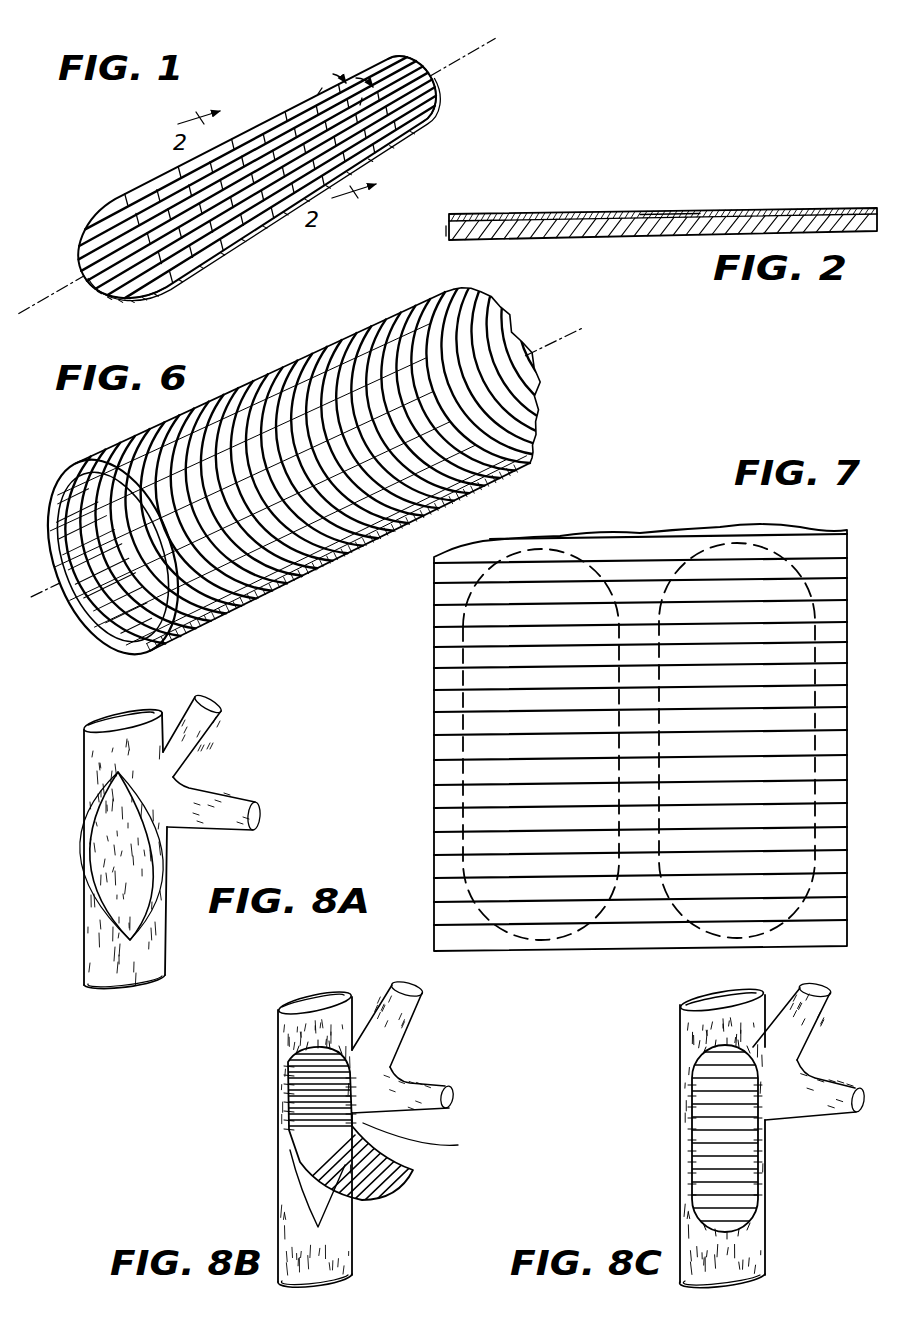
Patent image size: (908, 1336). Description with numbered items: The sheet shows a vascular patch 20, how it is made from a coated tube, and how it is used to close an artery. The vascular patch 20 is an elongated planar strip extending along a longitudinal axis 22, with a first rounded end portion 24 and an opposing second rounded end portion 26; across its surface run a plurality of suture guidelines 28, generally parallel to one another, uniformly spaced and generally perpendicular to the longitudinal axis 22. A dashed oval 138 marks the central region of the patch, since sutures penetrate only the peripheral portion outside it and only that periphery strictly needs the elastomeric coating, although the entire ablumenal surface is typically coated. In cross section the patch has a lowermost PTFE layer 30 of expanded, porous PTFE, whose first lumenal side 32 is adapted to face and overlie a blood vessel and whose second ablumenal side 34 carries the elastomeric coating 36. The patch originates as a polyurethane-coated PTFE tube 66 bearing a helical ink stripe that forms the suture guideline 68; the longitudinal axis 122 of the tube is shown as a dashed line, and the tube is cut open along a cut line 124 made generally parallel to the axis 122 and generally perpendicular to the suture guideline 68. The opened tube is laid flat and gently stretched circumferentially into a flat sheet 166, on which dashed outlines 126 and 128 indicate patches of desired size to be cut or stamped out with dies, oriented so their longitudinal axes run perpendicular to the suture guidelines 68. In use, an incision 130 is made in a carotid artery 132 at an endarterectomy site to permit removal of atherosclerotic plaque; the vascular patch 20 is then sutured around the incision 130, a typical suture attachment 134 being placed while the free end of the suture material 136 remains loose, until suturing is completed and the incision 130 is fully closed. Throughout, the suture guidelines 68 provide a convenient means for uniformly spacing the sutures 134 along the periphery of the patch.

In FIG. 1, the vascular patch 20 is at (305, 75).
In FIG. 2, the vascular patch 20 is at (756, 193).
In FIG. 8B, the vascular patch 20 is at (416, 1176).
In FIG. 8C, the vascular patch 20 is at (762, 1172).
In FIG. 1, the longitudinal axis 22 is at (430, 68).
In FIG. 1, the first rounded end portion 24 is at (68, 262).
In FIG. 1, the second rounded end portion 26 is at (458, 74).
In FIG. 1, the suture guidelines 28 is at (134, 197).
In FIG. 2, the PTFE layer 30 is at (446, 226).
In FIG. 2, the first lumenal side 32 is at (500, 238).
In FIG. 2, the second ablumenal side 34 is at (552, 196).
In FIG. 2, the elastomeric coating 36 is at (665, 211).
In FIG. 6, the PTFE tube 66 is at (138, 431).
In FIG. 6, the suture guideline 68 is at (257, 387).
In FIG. 7, the suture guideline 68 is at (436, 688).
In FIG. 8B, the suture guideline 68 is at (398, 1143).
In FIG. 8C, the suture guideline 68 is at (705, 1163).
In FIG. 6, the longitudinal axis 122 is at (113, 558).
In FIG. 6, the cut line 124 is at (487, 323).
In FIG. 7, the vascular patch outline 126 is at (582, 558).
In FIG. 7, the vascular patch outline 128 is at (782, 557).
In FIG. 8A, the incision 130 is at (100, 860).
In FIG. 8B, the incision 130 is at (310, 1214).
In FIG. 8A, the carotid artery 132 is at (85, 753).
In FIG. 8B, the carotid artery 132 is at (280, 1035).
In FIG. 8C, the carotid artery 132 is at (684, 1022).
In FIG. 8B, the suture attachment 134 is at (291, 1097).
In FIG. 8C, the suture attachment 134 is at (762, 1103).
In FIG. 8B, the free end of the suture material 136 is at (482, 1105).
In FIG. 1, the dashed oval 138 is at (339, 64).
In FIG. 7, the flat sheet 166 is at (850, 547).